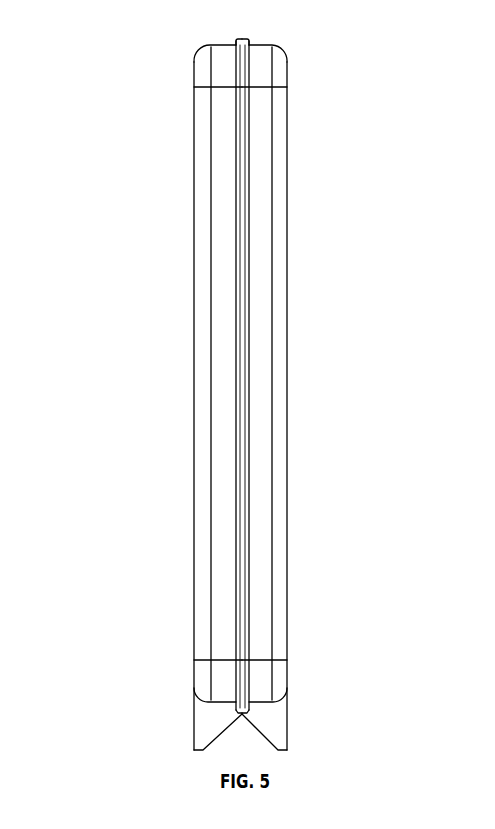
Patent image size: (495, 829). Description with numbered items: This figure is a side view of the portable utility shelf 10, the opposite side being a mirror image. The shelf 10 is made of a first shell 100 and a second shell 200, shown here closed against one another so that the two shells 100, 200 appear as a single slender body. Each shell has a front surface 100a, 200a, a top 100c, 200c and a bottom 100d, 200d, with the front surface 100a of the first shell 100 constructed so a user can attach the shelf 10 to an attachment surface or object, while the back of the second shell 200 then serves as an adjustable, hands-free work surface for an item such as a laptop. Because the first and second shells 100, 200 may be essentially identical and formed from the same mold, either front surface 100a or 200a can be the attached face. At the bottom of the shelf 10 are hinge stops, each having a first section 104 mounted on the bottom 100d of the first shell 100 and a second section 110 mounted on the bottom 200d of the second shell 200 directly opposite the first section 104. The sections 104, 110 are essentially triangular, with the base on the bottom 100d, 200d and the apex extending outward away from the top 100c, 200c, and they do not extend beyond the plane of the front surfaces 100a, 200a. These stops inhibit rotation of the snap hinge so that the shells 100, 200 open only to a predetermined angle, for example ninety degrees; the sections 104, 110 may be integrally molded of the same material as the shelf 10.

The portable utility shelf 10 is at (247, 394).
The first shell 100 is at (146, 394).
The front surface of the first shell 100a is at (195, 500).
The top of the first shell 100c is at (222, 52).
The bottom of the first shell 100d is at (202, 697).
The first section of the hinge stop 104 is at (207, 718).
The second shell 200 is at (342, 394).
The front surface of the second shell 200a is at (288, 550).
The top of the second shell 200c is at (260, 49).
The bottom of the second shell 200d is at (273, 695).
The second section of the hinge stop 110 is at (273, 723).